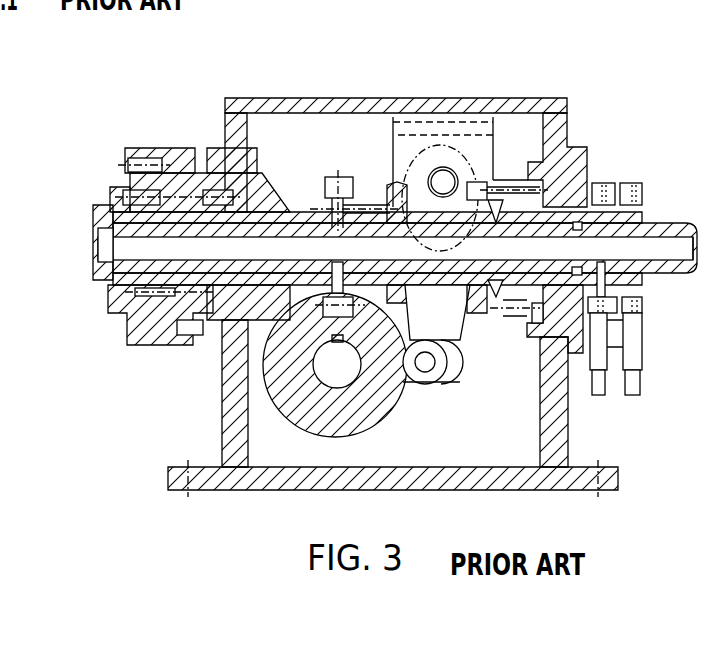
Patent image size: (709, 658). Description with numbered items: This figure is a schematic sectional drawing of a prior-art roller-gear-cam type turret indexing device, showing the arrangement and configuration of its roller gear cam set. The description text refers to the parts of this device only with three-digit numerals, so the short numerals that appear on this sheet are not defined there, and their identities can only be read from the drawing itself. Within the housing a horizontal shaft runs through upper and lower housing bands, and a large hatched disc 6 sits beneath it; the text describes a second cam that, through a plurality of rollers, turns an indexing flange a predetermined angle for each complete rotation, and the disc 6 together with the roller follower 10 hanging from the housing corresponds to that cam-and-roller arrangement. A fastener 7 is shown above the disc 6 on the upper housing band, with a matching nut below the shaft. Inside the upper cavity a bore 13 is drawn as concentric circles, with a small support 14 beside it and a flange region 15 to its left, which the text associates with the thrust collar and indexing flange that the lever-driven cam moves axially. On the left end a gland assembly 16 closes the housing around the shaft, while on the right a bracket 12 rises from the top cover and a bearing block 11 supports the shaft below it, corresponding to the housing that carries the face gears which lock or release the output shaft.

The cam disc 6 is at (316, 427).
The fastening bolt 7 is at (327, 176).
The cam follower roller 10 is at (456, 343).
The bearing block 11 is at (512, 317).
The bracket 12 is at (545, 166).
The bore 13 is at (448, 220).
The support 14 is at (398, 203).
The housing flange 15 is at (317, 203).
The gland assembly 16 is at (160, 323).